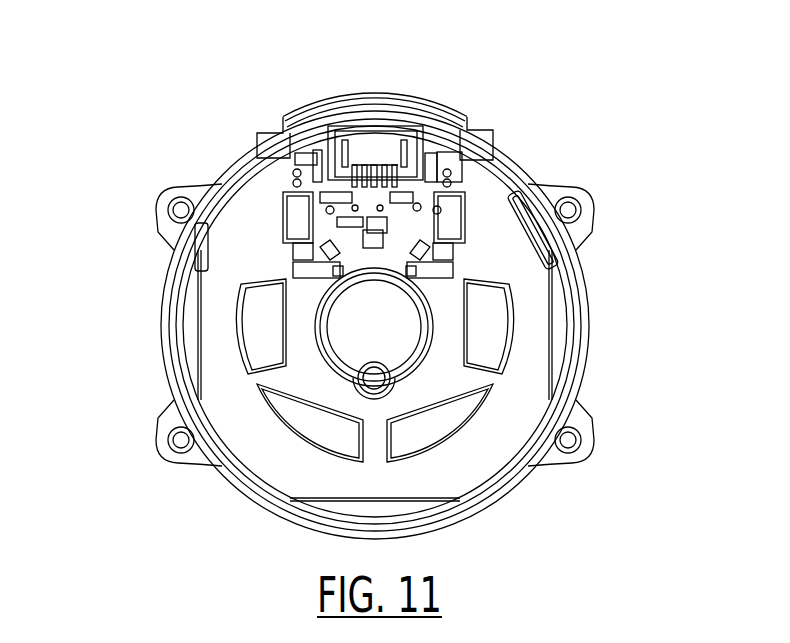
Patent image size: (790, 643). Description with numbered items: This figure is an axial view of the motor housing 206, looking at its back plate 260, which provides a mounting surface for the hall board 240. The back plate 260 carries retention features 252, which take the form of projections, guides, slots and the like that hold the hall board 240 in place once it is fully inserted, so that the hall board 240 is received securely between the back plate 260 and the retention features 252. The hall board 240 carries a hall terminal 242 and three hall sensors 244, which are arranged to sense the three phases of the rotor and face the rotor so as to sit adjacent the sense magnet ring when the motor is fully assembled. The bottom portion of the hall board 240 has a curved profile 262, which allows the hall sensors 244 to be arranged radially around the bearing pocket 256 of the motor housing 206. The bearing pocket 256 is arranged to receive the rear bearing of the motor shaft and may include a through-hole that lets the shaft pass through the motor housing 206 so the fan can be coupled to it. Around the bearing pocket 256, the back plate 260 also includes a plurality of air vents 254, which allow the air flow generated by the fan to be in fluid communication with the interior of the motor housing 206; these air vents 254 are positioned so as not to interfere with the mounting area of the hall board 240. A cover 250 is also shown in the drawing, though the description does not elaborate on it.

The motor housing 206 is at (147, 21).
The hall board 240 is at (425, 172).
The hall terminal 242 is at (372, 145).
The hall sensors 244 is at (420, 247).
The cover 250 is at (313, 147).
The retention features 252 is at (302, 208).
The air vents 254 is at (482, 332).
The bearing pocket 256 is at (385, 320).
The back plate 260 is at (235, 245).
The curved profile 262 is at (373, 245).